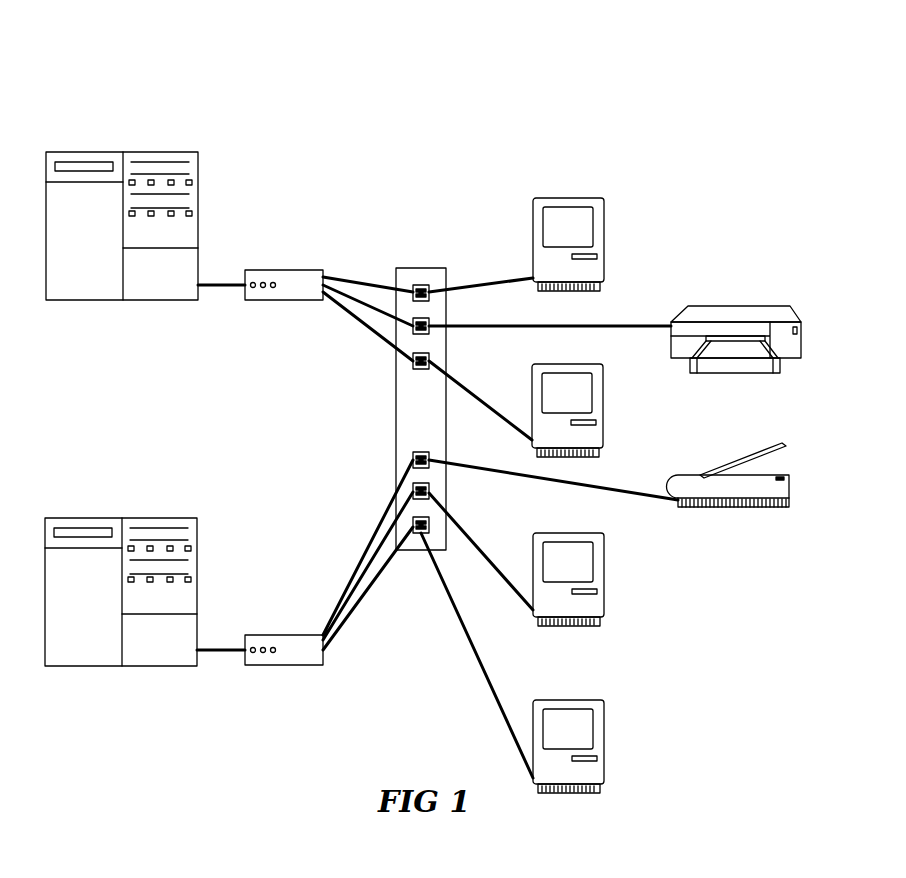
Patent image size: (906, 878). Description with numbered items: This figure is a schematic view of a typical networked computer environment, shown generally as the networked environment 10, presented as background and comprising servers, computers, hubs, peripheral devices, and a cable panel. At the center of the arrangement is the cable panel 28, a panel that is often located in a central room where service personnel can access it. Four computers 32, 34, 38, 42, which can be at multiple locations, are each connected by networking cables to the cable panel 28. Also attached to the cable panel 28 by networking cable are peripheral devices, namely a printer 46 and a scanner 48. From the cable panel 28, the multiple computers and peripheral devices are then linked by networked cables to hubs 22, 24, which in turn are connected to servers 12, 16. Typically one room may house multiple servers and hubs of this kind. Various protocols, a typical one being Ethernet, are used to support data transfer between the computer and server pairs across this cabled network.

The networked environment 10 is at (157, 58).
The server 12 is at (198, 196).
The server 16 is at (197, 562).
The hub 22 is at (267, 271).
The hub 24 is at (265, 635).
The cable panel 28 is at (406, 268).
The computer 32 is at (604, 244).
The computer 34 is at (603, 412).
The computer 38 is at (605, 580).
The computer 42 is at (605, 745).
The printer 46 is at (693, 306).
The scanner 48 is at (682, 473).